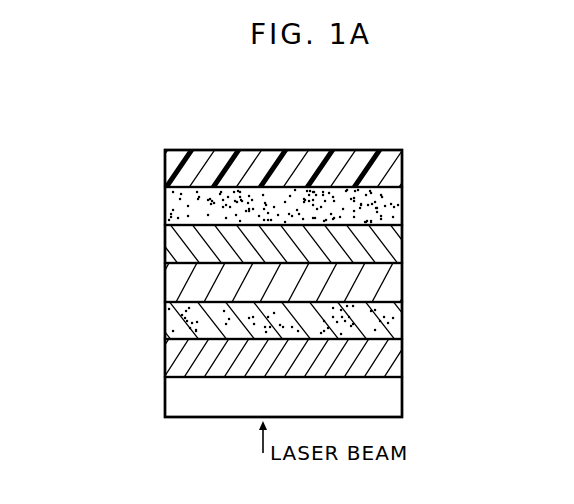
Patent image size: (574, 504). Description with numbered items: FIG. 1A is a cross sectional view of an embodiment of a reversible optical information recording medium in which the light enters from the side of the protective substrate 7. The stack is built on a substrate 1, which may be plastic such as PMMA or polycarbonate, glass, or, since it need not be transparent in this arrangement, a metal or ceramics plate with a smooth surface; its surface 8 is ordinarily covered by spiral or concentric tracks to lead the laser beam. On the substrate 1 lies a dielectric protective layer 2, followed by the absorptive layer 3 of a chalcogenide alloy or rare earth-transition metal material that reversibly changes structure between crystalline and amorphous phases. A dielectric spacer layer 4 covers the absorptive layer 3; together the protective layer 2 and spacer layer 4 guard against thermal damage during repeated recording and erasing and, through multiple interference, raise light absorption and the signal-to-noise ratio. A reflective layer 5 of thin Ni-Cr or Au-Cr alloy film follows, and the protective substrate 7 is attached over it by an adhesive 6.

The substrate 1 is at (396, 397).
The protective layer 2 is at (396, 358).
The absorptive layer 3 is at (396, 322).
The spacer layer 4 is at (396, 283).
The reflective layer 5 is at (396, 247).
The adhesive 6 is at (396, 209).
The protective substrate 7 is at (396, 171).
The surface of the substrate 8 is at (175, 384).